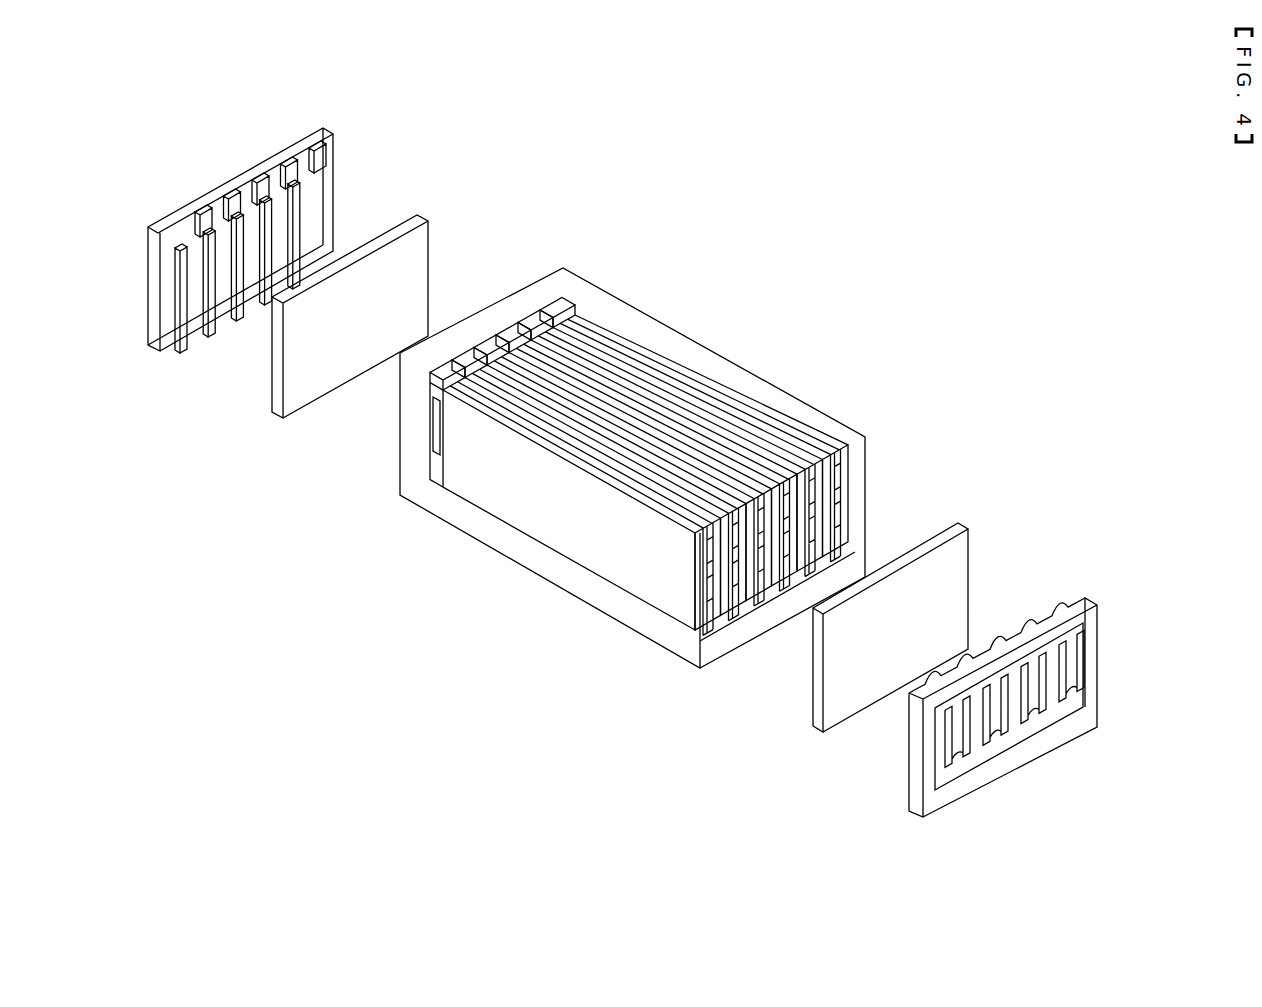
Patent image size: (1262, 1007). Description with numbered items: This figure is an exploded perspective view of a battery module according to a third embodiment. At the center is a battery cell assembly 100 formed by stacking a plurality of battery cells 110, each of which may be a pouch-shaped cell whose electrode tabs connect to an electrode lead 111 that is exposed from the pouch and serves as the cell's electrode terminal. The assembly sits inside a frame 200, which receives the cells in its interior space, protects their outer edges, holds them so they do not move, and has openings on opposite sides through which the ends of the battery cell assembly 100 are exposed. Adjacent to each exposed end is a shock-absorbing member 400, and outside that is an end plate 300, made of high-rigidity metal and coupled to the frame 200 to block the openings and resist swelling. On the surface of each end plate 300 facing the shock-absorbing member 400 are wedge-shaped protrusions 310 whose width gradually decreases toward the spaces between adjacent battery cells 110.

The battery cell assembly 100 is at (601, 468).
The battery cell 110 is at (601, 468).
The electrode lead 111 is at (440, 448).
The frame 200 is at (837, 415).
The end plate 300 is at (659, 469).
The protrusion 310 is at (223, 302).
The shock-absorbing member 400 is at (433, 208).